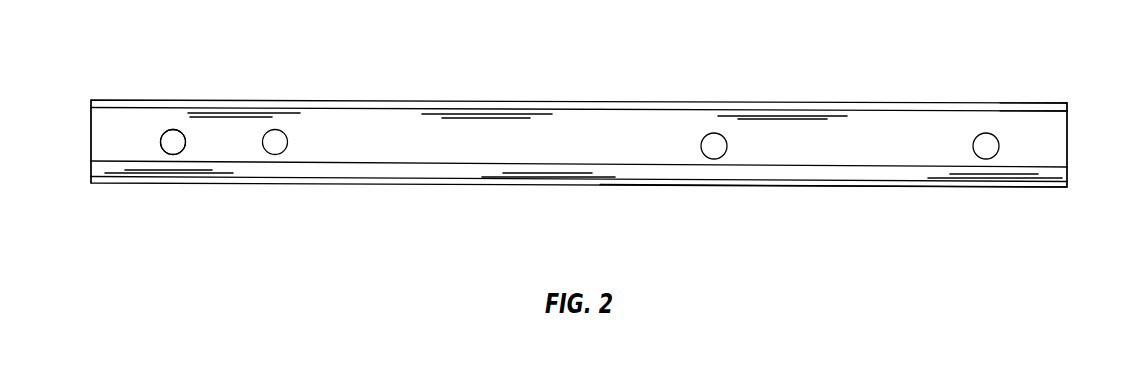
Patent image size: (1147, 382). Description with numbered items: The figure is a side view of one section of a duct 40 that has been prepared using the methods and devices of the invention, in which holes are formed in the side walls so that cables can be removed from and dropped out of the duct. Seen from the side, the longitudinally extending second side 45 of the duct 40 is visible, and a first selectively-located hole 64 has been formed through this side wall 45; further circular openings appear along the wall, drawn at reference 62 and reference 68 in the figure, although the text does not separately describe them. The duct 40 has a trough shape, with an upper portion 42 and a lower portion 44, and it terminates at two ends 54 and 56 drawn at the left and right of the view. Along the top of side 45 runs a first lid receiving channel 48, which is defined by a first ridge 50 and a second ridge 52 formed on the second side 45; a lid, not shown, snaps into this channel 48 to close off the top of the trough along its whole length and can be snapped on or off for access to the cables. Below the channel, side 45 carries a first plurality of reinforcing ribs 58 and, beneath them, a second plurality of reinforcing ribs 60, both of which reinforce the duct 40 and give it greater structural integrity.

The duct 40 is at (730, 66).
The upper portion 42 is at (633, 100).
The lower portion 44 is at (697, 186).
The second side 45 is at (248, 150).
The first lid receiving channel 48 is at (887, 105).
The first ridge 50 is at (1022, 103).
The second ridge 52 is at (1050, 112).
The end 54 is at (91, 139).
The end 56 is at (1068, 145).
The first plurality of reinforcing ribs 58 is at (913, 175).
The second plurality of reinforcing ribs 60 is at (840, 186).
The mounting aperture 62 is at (173, 142).
The first selectively-located hole 64 is at (173, 142).
The mounting aperture 68 is at (275, 142).